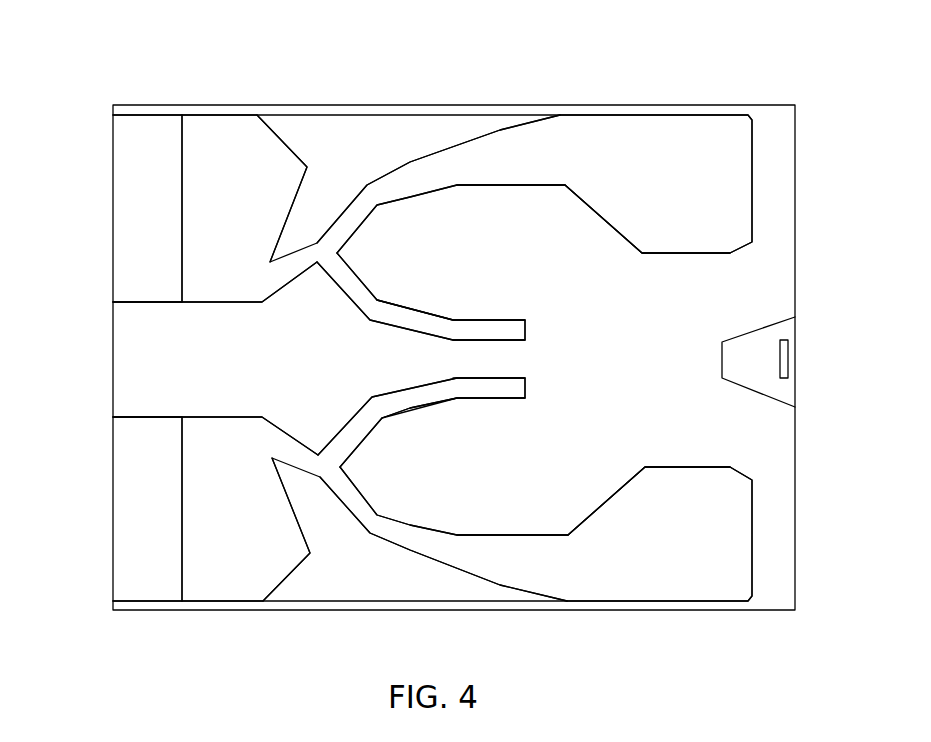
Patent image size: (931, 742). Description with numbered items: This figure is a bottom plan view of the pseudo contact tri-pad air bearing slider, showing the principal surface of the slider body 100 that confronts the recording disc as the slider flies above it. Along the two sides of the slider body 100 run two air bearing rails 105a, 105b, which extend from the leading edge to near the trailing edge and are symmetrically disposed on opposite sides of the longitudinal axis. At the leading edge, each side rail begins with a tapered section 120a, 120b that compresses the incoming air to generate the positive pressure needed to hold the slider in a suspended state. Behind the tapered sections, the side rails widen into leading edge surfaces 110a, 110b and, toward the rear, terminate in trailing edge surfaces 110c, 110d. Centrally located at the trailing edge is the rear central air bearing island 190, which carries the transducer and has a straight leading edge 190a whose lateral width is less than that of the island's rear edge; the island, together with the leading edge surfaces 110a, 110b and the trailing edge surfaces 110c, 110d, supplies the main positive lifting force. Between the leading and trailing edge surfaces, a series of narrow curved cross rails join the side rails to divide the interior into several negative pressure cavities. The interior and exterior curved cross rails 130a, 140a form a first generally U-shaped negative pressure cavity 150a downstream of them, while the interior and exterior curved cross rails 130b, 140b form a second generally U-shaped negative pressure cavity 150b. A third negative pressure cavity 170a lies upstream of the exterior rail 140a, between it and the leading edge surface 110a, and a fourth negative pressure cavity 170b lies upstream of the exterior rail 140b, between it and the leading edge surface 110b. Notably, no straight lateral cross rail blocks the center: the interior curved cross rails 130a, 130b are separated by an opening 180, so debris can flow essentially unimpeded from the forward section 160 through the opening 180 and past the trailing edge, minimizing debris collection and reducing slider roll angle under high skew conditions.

The slider body 100 is at (725, 428).
The air bearing rail 105a is at (587, 158).
The air bearing rail 105b is at (627, 565).
The leading edge surface 110a is at (233, 227).
The leading edge surface 110b is at (228, 488).
The trailing edge surface 110c is at (682, 208).
The trailing edge surface 110d is at (692, 558).
The tapered section 120a is at (155, 225).
The tapered section 120b is at (168, 527).
The interior curved cross rail 130a is at (442, 325).
The interior curved cross rail 130b is at (488, 393).
The exterior curved cross rail 140a is at (417, 180).
The exterior curved cross rail 140b is at (438, 545).
The first negative pressure cavity 150a is at (415, 253).
The second negative pressure cavity 150b is at (420, 467).
The forward section 160 is at (267, 365).
The third negative pressure cavity 170a is at (320, 212).
The fourth negative pressure cavity 170b is at (327, 527).
The opening 180 is at (460, 363).
The rear central air bearing island 190 is at (772, 352).
The straight leading edge 190a is at (722, 360).